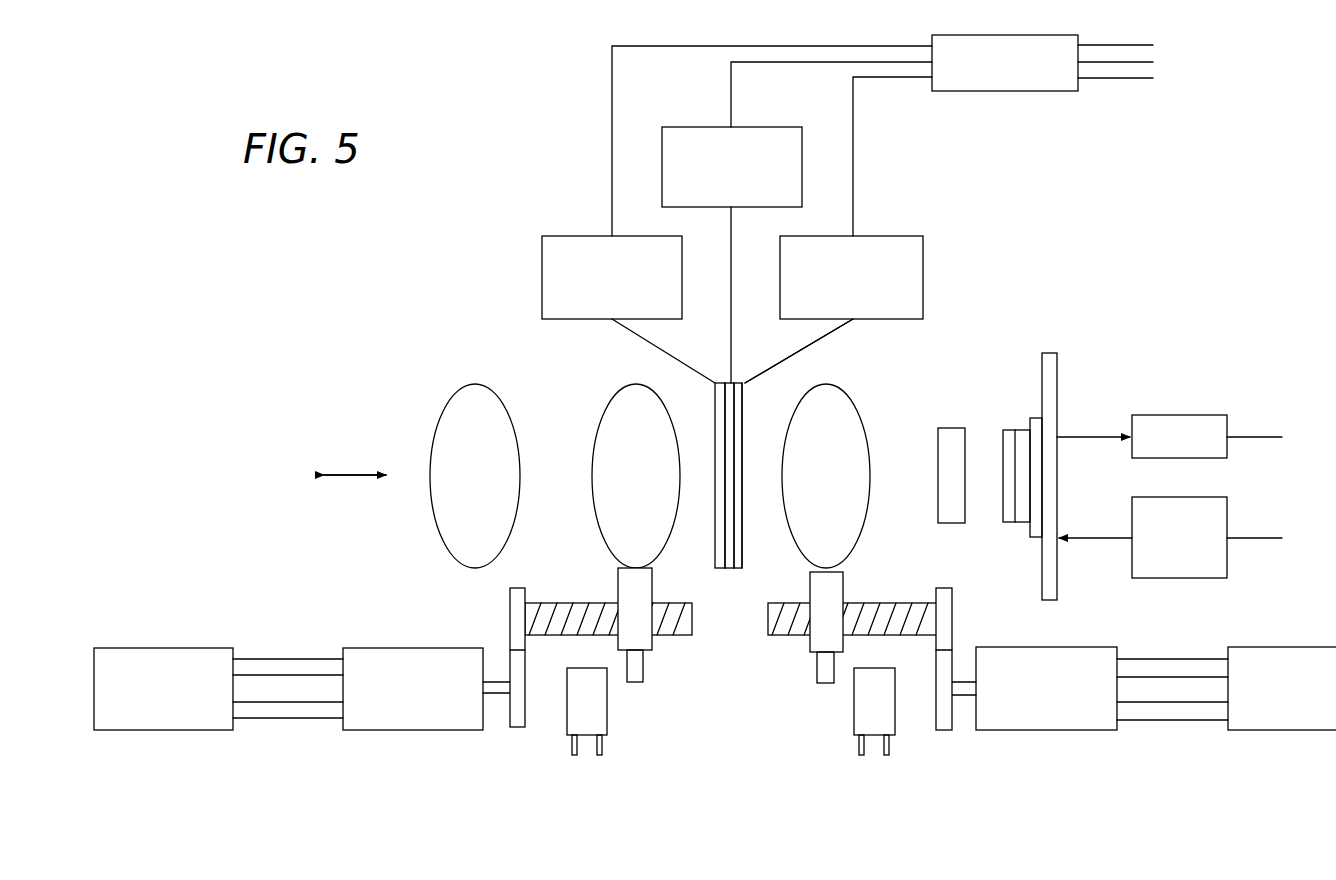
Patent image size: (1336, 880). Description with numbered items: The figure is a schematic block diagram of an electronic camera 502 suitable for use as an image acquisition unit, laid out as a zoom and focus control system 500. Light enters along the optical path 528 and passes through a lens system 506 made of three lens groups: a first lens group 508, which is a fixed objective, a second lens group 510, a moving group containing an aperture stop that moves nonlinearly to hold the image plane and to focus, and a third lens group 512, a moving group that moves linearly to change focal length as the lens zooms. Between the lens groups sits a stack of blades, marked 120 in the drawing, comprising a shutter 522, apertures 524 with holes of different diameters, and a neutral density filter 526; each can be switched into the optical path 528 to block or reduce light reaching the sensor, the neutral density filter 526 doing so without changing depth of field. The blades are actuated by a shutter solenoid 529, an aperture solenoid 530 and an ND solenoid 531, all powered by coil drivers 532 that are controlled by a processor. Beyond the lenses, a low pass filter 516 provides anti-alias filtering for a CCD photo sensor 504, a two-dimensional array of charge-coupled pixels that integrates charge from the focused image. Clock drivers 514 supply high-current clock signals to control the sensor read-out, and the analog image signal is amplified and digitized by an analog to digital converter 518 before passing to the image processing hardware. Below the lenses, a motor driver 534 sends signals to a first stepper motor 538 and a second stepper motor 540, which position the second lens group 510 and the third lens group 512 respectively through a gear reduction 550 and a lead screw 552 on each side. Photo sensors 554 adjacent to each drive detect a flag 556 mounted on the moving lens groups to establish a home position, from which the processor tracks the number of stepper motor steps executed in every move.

The zoom and focus control system 500 is at (310, 336).
The electronic camera 502 is at (376, 580).
The CCD photo sensor 504 is at (1020, 450).
The lens system 506 is at (832, 364).
The first lens group 508 is at (509, 413).
The second lens group 510 is at (594, 508).
The third lens group 512 is at (855, 406).
The clock drivers 514 is at (1132, 518).
The low pass filter 516 is at (957, 428).
The analog to digital converter 518 is at (1192, 415).
The shutter 522 is at (715, 400).
The apertures 524 is at (728, 520).
The neutral density filter 526 is at (748, 412).
The optical path 528 is at (355, 475).
The shutter solenoid 529 is at (542, 276).
The aperture solenoid 530 is at (662, 167).
The ND solenoid 531 is at (897, 236).
The coil drivers 532 is at (990, 91).
The motor driver 534 is at (148, 732).
The first stepper motor 538 is at (392, 732).
The second stepper motor 540 is at (1080, 732).
The gear reduction 550 is at (527, 662).
The lead screw 552 is at (673, 636).
The photo sensors 554 is at (607, 722).
The flag 556 is at (637, 683).
The shutter/aperture/ND filter stack 120 is at (735, 568).